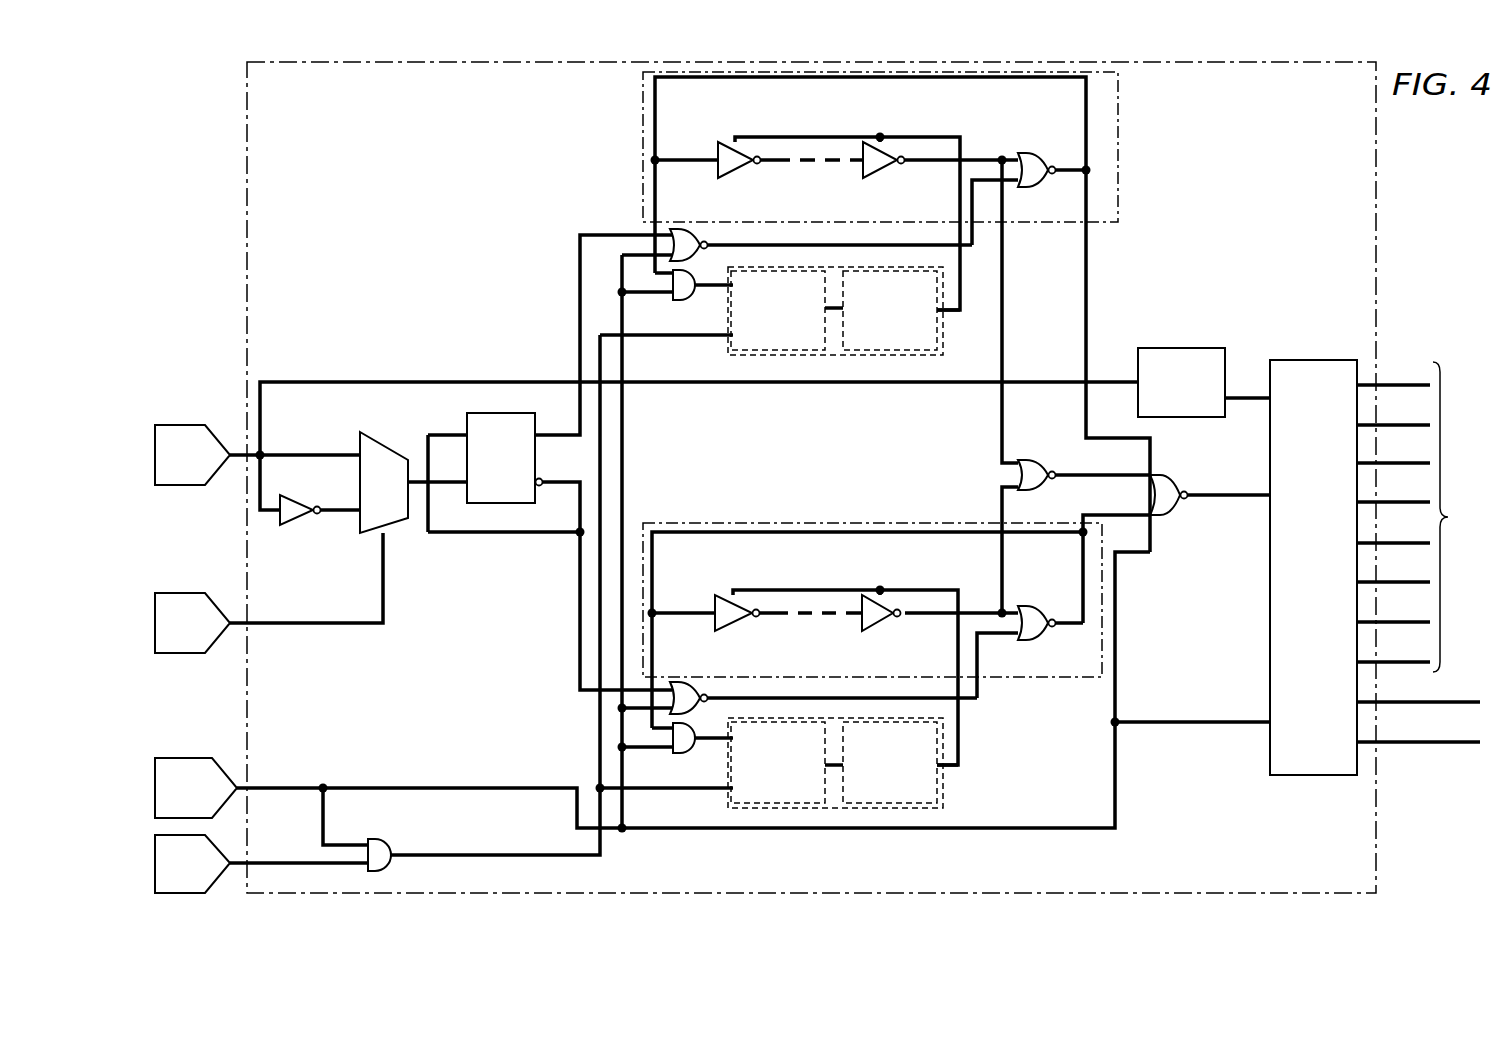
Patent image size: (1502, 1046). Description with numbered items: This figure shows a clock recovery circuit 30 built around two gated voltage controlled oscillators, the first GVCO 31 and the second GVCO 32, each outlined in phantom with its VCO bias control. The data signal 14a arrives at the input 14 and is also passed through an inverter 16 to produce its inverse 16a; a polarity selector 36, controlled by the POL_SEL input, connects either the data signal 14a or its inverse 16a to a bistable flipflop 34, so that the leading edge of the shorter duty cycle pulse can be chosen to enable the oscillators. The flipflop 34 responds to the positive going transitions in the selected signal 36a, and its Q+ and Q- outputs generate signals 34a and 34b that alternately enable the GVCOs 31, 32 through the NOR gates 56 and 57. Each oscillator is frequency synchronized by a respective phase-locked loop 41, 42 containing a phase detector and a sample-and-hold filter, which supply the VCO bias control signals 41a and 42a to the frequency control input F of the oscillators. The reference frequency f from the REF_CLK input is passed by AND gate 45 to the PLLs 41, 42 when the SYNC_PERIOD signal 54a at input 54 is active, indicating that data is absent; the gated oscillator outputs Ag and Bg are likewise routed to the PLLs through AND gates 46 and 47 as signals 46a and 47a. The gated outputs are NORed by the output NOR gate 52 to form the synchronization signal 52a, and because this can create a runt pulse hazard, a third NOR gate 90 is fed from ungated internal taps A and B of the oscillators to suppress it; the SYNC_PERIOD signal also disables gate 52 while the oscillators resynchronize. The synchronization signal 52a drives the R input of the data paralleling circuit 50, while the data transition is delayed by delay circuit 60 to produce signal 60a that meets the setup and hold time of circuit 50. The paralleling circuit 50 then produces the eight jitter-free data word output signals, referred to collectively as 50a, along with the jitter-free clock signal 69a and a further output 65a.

The clock recovery circuit 30 is at (247, 112).
The first GVCO 31 is at (643, 118).
The second GVCO 32 is at (762, 523).
The input 14 is at (188, 425).
The data signal 14a is at (684, 409).
The inverter 16 is at (301, 521).
The inverse of the data signal 16a is at (340, 496).
The bistable flipflop 34 is at (467, 413).
The Q+ output signal 34a is at (603, 335).
The Q- output signal 34b is at (604, 571).
The polarity selector 36 is at (394, 520).
The polarity selector output signal 36a is at (494, 483).
The first phase-locked loop 41 is at (728, 347).
The first VCO bias control signal 41a is at (962, 296).
The second phase-locked loop 42 is at (728, 800).
The second VCO bias control signal 42a is at (958, 720).
The AND gate 45 is at (378, 839).
The AND gate 46 is at (673, 282).
The AND gate output signal 46a is at (712, 274).
The AND gate 47 is at (673, 740).
The AND gate output signal 47a is at (712, 727).
The data paralleling circuit 50 is at (1310, 360).
The data word output signals 50a is at (1423, 517).
The NOR gate 52 is at (1170, 515).
The synchronization signal 52a is at (1229, 484).
The SYNC_PERIOD input 54 is at (183, 758).
The SYNC_PERIOD control signal 54a is at (753, 687).
The NOR gate 56 is at (690, 229).
The NOR gate 57 is at (690, 682).
The delay circuit 60 is at (1182, 348).
The delayed data signal 60a is at (1247, 385).
The output line 65a is at (1418, 690).
The clock signal 69a is at (1418, 730).
The NOR gate 90 is at (1031, 461).